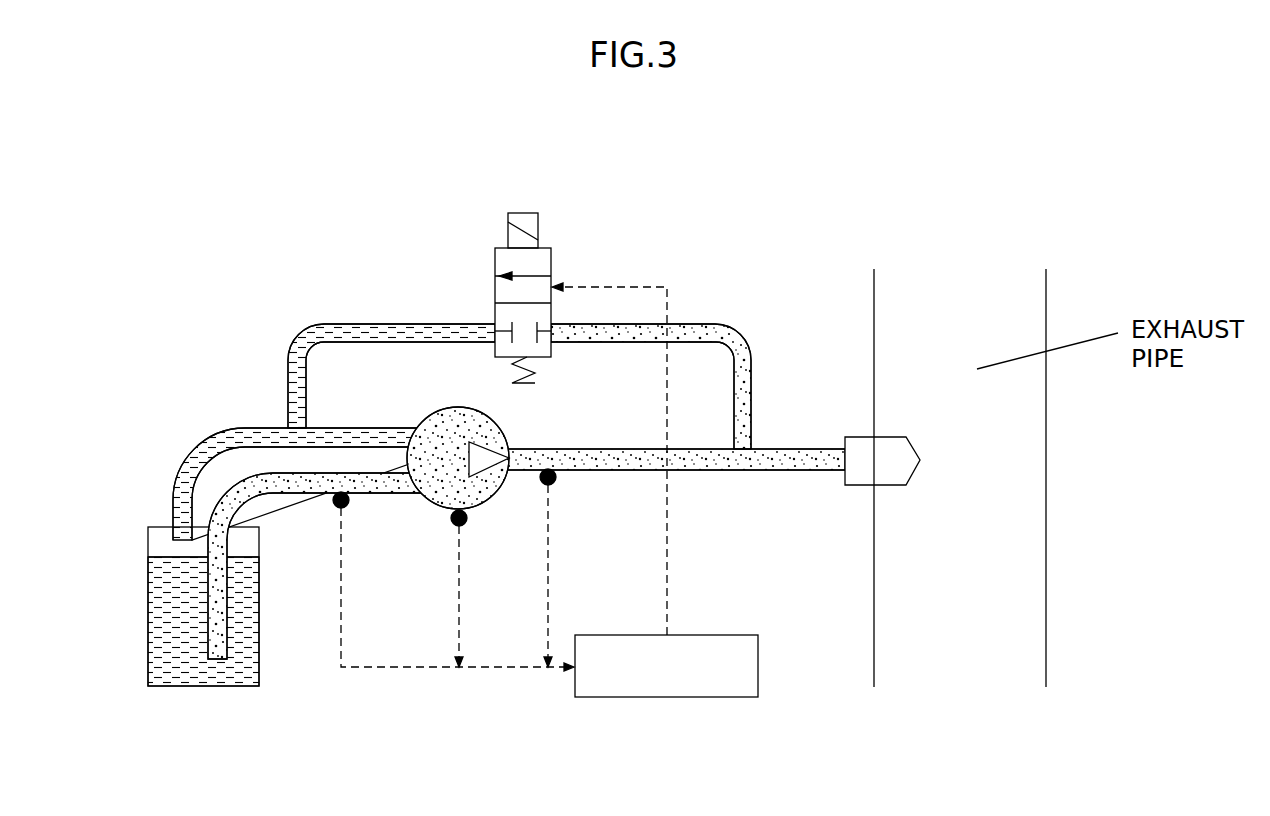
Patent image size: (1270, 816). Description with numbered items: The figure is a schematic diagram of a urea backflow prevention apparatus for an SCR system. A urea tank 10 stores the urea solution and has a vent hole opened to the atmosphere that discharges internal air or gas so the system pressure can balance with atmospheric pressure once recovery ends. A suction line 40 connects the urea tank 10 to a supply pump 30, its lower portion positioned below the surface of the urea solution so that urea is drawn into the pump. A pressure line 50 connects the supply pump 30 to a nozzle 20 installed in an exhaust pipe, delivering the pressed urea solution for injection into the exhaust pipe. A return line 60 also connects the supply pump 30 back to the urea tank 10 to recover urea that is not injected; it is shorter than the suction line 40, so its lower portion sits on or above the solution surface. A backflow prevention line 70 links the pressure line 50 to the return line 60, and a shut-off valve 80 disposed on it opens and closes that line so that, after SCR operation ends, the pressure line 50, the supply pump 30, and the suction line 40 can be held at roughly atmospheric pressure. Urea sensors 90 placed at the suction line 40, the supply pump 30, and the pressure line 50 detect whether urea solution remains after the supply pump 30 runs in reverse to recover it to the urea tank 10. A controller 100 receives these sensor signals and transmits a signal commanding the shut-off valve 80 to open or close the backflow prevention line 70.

The urea tank 10 is at (208, 686).
The nozzle 20 is at (886, 486).
The supply pump 30 is at (503, 430).
The suction line 40 is at (257, 492).
The pressure line 50 is at (790, 472).
The return line 60 is at (197, 458).
The backflow prevention line 70 is at (443, 333).
The shut-off valve 80 is at (495, 262).
The urea sensor 90 is at (545, 482).
The controller 100 is at (655, 490).